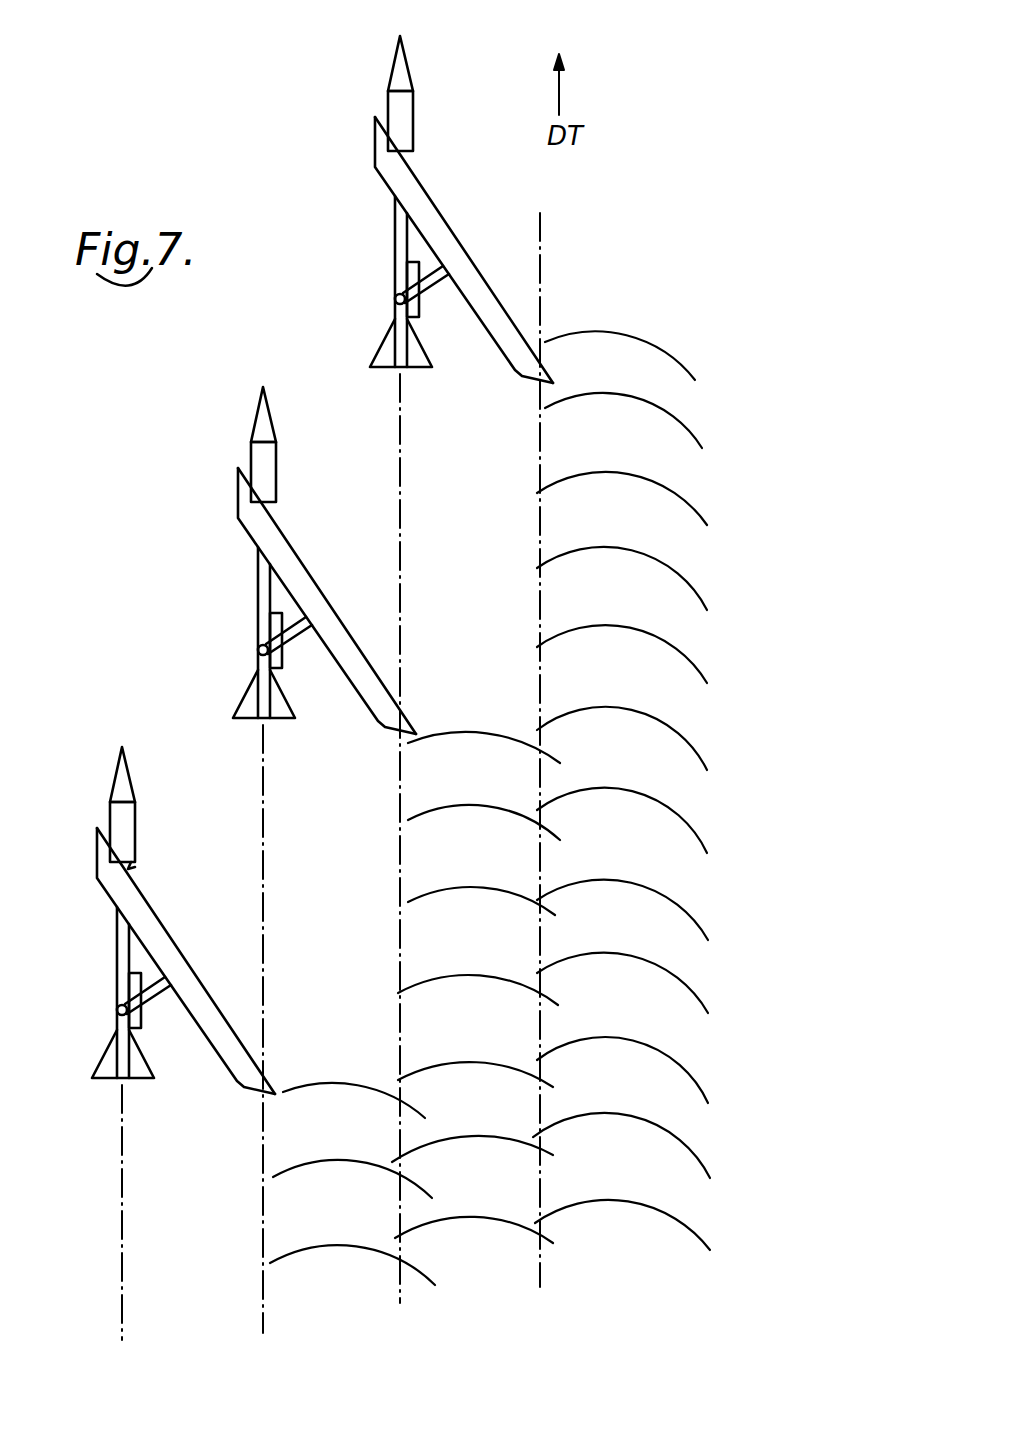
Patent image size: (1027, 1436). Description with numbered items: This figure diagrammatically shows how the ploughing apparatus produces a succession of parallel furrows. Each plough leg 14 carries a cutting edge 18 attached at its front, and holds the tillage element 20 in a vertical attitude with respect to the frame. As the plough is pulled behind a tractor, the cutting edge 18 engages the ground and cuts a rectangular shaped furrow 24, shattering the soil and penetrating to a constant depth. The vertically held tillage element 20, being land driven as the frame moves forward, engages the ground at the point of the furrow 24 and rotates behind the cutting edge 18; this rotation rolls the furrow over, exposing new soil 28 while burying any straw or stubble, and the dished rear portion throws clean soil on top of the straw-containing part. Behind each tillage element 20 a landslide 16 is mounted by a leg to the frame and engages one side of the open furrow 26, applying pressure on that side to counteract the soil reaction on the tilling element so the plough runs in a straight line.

The plough leg 14 is at (409, 117).
The landslide 16 is at (400, 321).
The cutting edge 18 is at (389, 68).
The tillage element 20 is at (378, 158).
The furrow 24 is at (131, 870).
The open furrow 26 is at (494, 518).
The new soil 28 is at (620, 327).